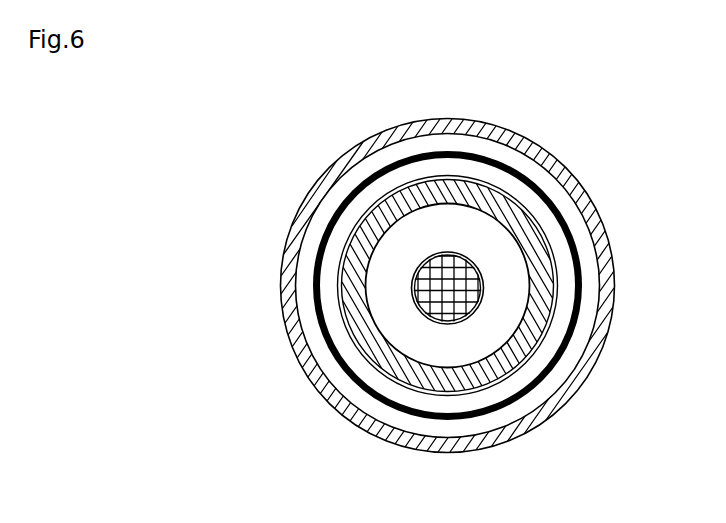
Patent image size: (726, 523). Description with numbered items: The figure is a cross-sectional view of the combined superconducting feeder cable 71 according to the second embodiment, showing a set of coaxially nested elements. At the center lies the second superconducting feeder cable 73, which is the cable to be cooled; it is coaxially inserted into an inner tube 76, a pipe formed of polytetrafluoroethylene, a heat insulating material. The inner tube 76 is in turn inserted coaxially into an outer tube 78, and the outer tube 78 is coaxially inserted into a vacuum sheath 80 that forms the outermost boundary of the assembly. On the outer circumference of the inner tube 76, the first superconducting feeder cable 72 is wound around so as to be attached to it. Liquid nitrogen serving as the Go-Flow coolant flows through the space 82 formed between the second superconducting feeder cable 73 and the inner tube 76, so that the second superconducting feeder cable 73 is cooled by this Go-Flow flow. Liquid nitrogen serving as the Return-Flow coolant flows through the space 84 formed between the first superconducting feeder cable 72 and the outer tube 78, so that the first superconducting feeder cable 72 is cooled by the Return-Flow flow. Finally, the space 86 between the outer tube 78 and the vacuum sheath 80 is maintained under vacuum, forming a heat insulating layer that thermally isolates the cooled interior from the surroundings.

The superconducting feeder cable 71 is at (592, 124).
The second superconducting feeder cable 73 is at (432, 318).
The space 82 is at (507, 313).
The inner tube 76 is at (452, 382).
The first superconducting feeder cable 72 is at (522, 363).
The space 84 is at (547, 359).
The outer tube 78 is at (502, 410).
The space 86 is at (595, 297).
The vacuum sheath 80 is at (613, 253).